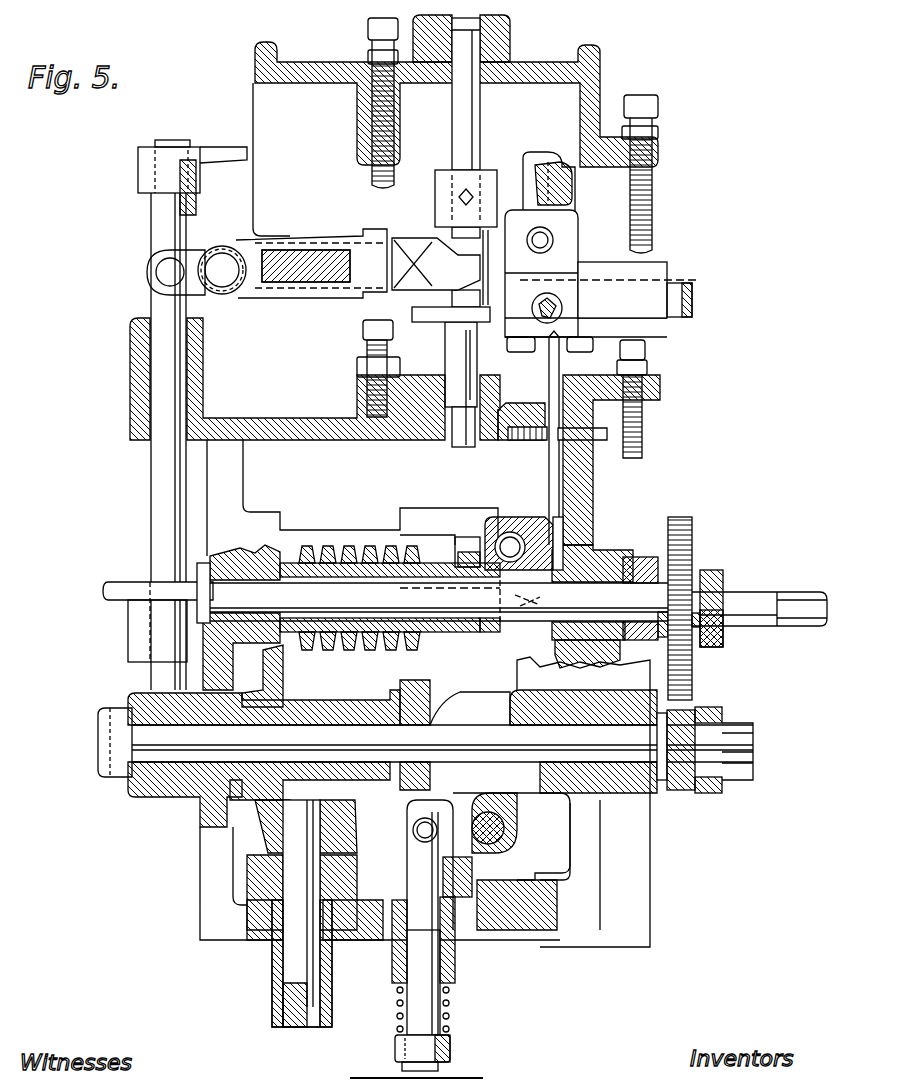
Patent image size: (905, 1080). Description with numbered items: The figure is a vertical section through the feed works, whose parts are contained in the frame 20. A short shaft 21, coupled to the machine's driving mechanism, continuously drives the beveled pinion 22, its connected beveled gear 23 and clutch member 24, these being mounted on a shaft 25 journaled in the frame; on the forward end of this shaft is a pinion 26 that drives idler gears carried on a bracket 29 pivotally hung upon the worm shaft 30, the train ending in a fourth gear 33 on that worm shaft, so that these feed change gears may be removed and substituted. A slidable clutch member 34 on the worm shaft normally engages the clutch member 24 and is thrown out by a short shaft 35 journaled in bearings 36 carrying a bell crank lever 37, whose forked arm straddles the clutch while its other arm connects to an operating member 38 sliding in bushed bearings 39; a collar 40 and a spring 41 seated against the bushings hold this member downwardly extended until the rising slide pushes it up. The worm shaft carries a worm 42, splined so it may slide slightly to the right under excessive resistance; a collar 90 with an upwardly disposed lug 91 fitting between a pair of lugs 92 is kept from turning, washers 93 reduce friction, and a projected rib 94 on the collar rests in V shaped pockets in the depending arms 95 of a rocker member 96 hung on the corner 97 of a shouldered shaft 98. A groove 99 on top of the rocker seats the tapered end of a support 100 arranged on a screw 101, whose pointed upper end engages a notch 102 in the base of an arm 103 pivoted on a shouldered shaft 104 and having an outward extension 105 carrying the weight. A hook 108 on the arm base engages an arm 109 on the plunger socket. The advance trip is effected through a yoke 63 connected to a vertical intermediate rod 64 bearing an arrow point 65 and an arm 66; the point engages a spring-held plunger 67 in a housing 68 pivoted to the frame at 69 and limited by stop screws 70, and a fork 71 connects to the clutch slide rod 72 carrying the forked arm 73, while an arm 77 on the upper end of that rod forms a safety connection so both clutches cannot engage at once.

The frame 20 is at (278, 418).
The short shaft 21 is at (283, 955).
The beveled pinion 22 is at (255, 848).
The beveled gear 23 is at (285, 670).
The clutch member 24 is at (350, 780).
The shaft 25 is at (425, 742).
The pinion 26 is at (705, 793).
The bracket 29 is at (640, 557).
The worm shaft 30 is at (516, 604).
The fourth gear 33 is at (683, 522).
The slidable clutch member 34 is at (460, 700).
The short shaft 35 is at (500, 840).
The bearings 36 is at (511, 861).
The bell crank lever 37 is at (510, 832).
The operating member 38 is at (407, 957).
The bushed bearings 39 is at (458, 960).
The collar 40 is at (450, 1046).
The spring 41 is at (450, 1016).
The worm 42 is at (390, 645).
The yoke 63 is at (436, 190).
The intermediate rod 64 is at (458, 123).
The arrow point 65 is at (436, 264).
The arm 66 is at (432, 322).
The plunger 67 is at (420, 238).
The housing 68 is at (296, 237).
The pivot 69 is at (223, 250).
The stop screws 70 is at (372, 190).
The fork 71 is at (150, 268).
The clutch slide rod 72 is at (152, 213).
The forked arm 73 is at (118, 604).
The arm 77 is at (215, 147).
The collar 90 is at (497, 633).
The lug 91 is at (468, 537).
The lugs 92 is at (440, 535).
The washers 93 is at (446, 632).
The projected rib 94 is at (500, 598).
The depending arms 95 is at (537, 602).
The rocker member 96 is at (585, 545).
The corner 97 is at (505, 520).
The shouldered shaft 98 is at (520, 538).
The groove 99 is at (560, 535).
The support 100 is at (549, 465).
The screw 101 is at (520, 410).
The notch 102 is at (560, 330).
The arm 103 is at (610, 295).
The shouldered shaft 104 is at (560, 304).
The extension 105 is at (694, 296).
The hook 108 is at (540, 152).
The arm 109 is at (572, 185).